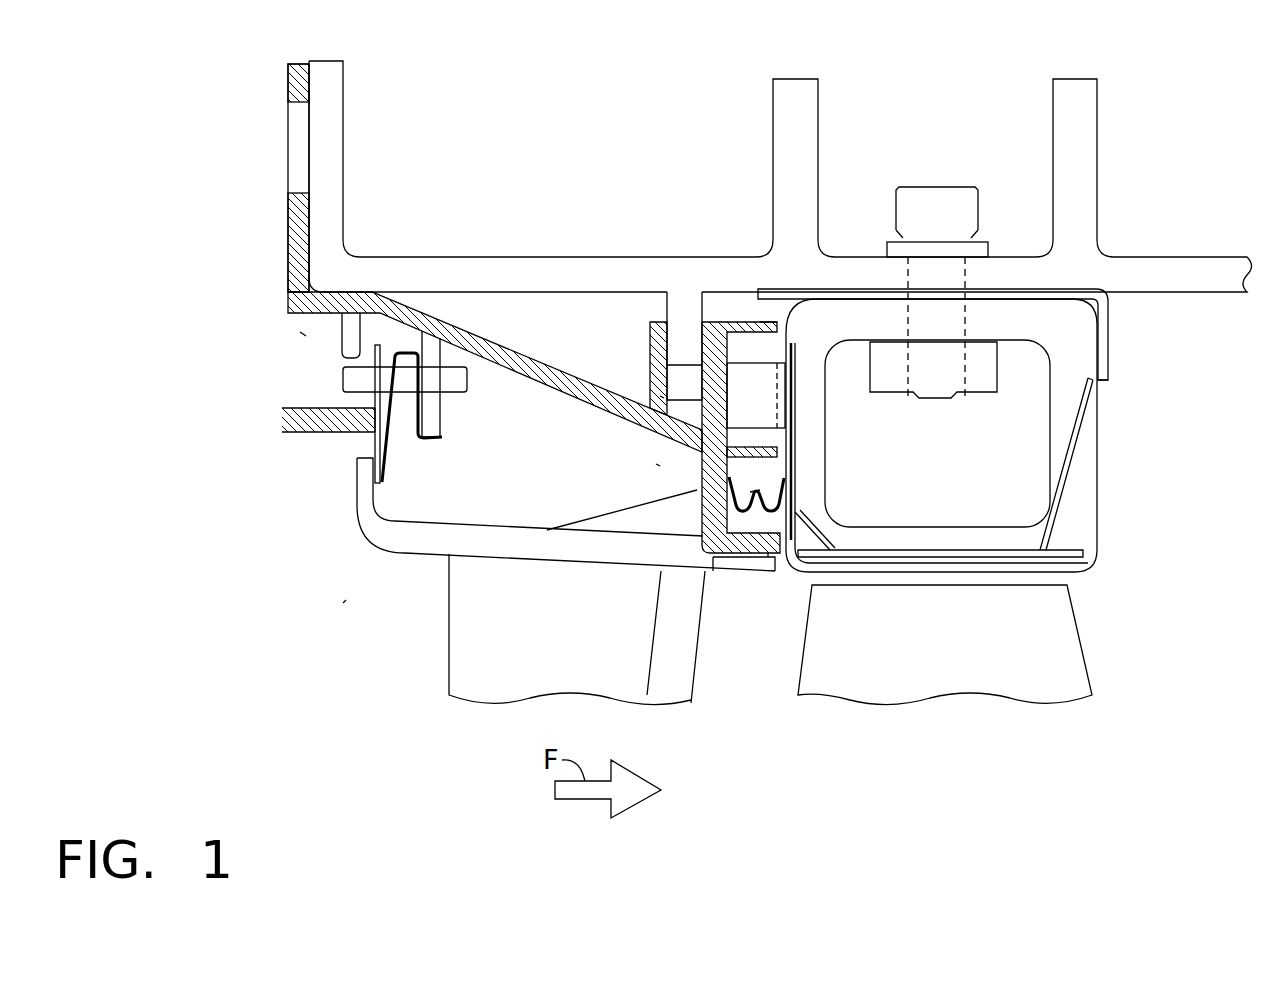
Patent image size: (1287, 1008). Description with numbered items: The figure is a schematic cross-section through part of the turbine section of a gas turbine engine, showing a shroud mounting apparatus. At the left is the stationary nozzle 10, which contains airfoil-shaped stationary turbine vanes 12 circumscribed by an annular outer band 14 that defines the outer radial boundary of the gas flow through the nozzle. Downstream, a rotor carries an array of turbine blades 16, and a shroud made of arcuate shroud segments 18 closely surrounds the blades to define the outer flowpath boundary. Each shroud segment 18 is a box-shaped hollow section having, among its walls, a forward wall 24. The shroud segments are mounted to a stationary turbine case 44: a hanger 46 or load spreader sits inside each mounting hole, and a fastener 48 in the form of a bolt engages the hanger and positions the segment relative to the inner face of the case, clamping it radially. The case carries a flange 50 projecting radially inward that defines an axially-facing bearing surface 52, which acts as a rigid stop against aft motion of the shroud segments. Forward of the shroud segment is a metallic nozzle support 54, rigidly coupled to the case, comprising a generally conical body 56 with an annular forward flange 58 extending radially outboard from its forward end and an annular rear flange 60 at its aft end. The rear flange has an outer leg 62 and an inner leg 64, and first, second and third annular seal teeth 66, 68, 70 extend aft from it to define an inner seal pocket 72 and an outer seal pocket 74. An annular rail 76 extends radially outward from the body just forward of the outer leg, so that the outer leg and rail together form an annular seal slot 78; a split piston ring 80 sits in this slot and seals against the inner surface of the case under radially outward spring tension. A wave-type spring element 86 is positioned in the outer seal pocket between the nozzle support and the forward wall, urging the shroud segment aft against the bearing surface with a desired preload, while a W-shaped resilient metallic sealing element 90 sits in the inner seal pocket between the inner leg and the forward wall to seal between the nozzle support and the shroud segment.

The stationary nozzle 10 is at (335, 612).
The stationary turbine vanes 12 is at (572, 643).
The outer band 14 is at (367, 517).
The turbine blades 16 is at (962, 650).
The shroud segments 18 is at (1125, 540).
The forward wall 24 is at (810, 420).
The turbine case 44 is at (325, 130).
The hanger 46 is at (980, 382).
The fastener 48 is at (957, 202).
The flange 50 is at (1135, 328).
The bearing surface 52 is at (1117, 390).
The nozzle support 54 is at (290, 345).
The body 56 is at (463, 330).
The forward flange 58 is at (295, 222).
The rear flange 60 is at (648, 475).
The outer leg 62 is at (713, 375).
The inner leg 64 is at (713, 571).
The first seal tooth 66 is at (763, 557).
The second seal tooth 68 is at (727, 449).
The third seal tooth 70 is at (750, 322).
The inner seal pocket 72 is at (790, 508).
The outer seal pocket 74 is at (782, 322).
The rail 76 is at (652, 338).
The seal slot 78 is at (652, 407).
The piston ring 80 is at (673, 310).
The spring element 86 is at (755, 382).
The sealing element 90 is at (755, 492).